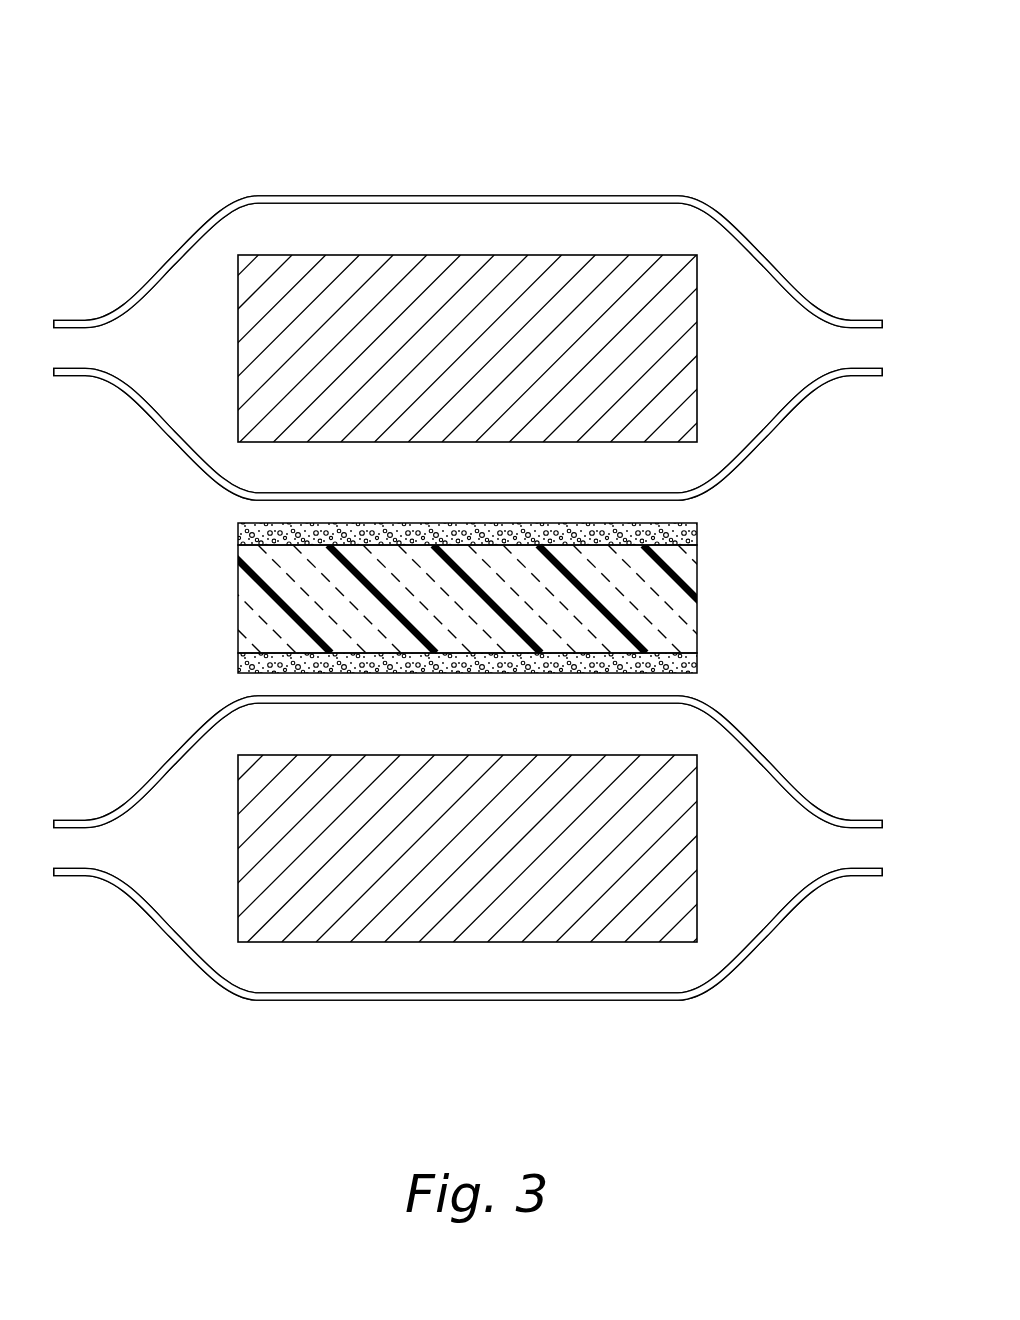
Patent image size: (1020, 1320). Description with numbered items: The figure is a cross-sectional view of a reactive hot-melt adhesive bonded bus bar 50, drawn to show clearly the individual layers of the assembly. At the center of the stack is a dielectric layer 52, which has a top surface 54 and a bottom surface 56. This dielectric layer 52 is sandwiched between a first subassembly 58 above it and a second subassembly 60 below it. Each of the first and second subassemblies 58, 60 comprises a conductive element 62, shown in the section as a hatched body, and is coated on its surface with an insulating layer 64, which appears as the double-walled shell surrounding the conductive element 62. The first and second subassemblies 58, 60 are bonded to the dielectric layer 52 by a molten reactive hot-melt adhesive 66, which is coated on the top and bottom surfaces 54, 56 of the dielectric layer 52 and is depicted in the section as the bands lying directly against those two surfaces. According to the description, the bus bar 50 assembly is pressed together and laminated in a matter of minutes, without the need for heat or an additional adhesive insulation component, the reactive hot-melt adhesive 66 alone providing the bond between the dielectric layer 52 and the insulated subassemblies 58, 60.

The reactive hot melt adhesive bonded bus bar 50 is at (516, 582).
The dielectric layer 52 is at (260, 605).
The top surface 54 is at (667, 537).
The bottom surface 56 is at (662, 657).
The first subassembly 58 is at (520, 150).
The second subassembly 60 is at (190, 1048).
The conductive element 62 is at (470, 290).
The insulating layer 64 is at (620, 196).
The reactive hot-melt adhesive 66 is at (433, 598).